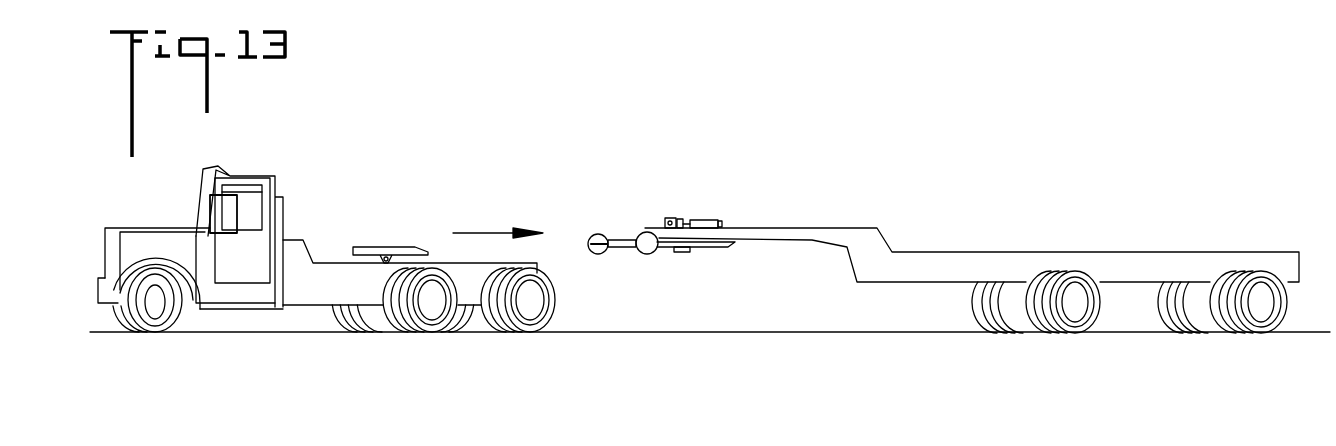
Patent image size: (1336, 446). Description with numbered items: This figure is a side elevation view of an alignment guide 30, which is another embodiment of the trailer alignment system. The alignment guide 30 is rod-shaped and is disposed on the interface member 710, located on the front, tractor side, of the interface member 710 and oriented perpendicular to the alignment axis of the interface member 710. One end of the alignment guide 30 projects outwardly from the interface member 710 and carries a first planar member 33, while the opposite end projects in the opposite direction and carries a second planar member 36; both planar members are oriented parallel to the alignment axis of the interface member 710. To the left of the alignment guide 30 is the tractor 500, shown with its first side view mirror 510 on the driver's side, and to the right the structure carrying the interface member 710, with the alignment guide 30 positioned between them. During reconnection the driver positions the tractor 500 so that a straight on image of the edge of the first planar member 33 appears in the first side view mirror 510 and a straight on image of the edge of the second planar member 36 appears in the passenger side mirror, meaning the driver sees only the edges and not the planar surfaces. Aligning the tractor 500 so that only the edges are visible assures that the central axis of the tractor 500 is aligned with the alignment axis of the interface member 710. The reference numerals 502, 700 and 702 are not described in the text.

The tractor 500 is at (332, 203).
The first side view mirror 510 is at (223, 218).
The fifth wheel 502 is at (388, 250).
The alignment guide 30 is at (588, 218).
The second planar member 36 is at (597, 256).
The first planar member 33 is at (645, 247).
The trailer 700 is at (908, 204).
The trailer coupling bracket 702 is at (677, 252).
The interface member 710 is at (722, 244).